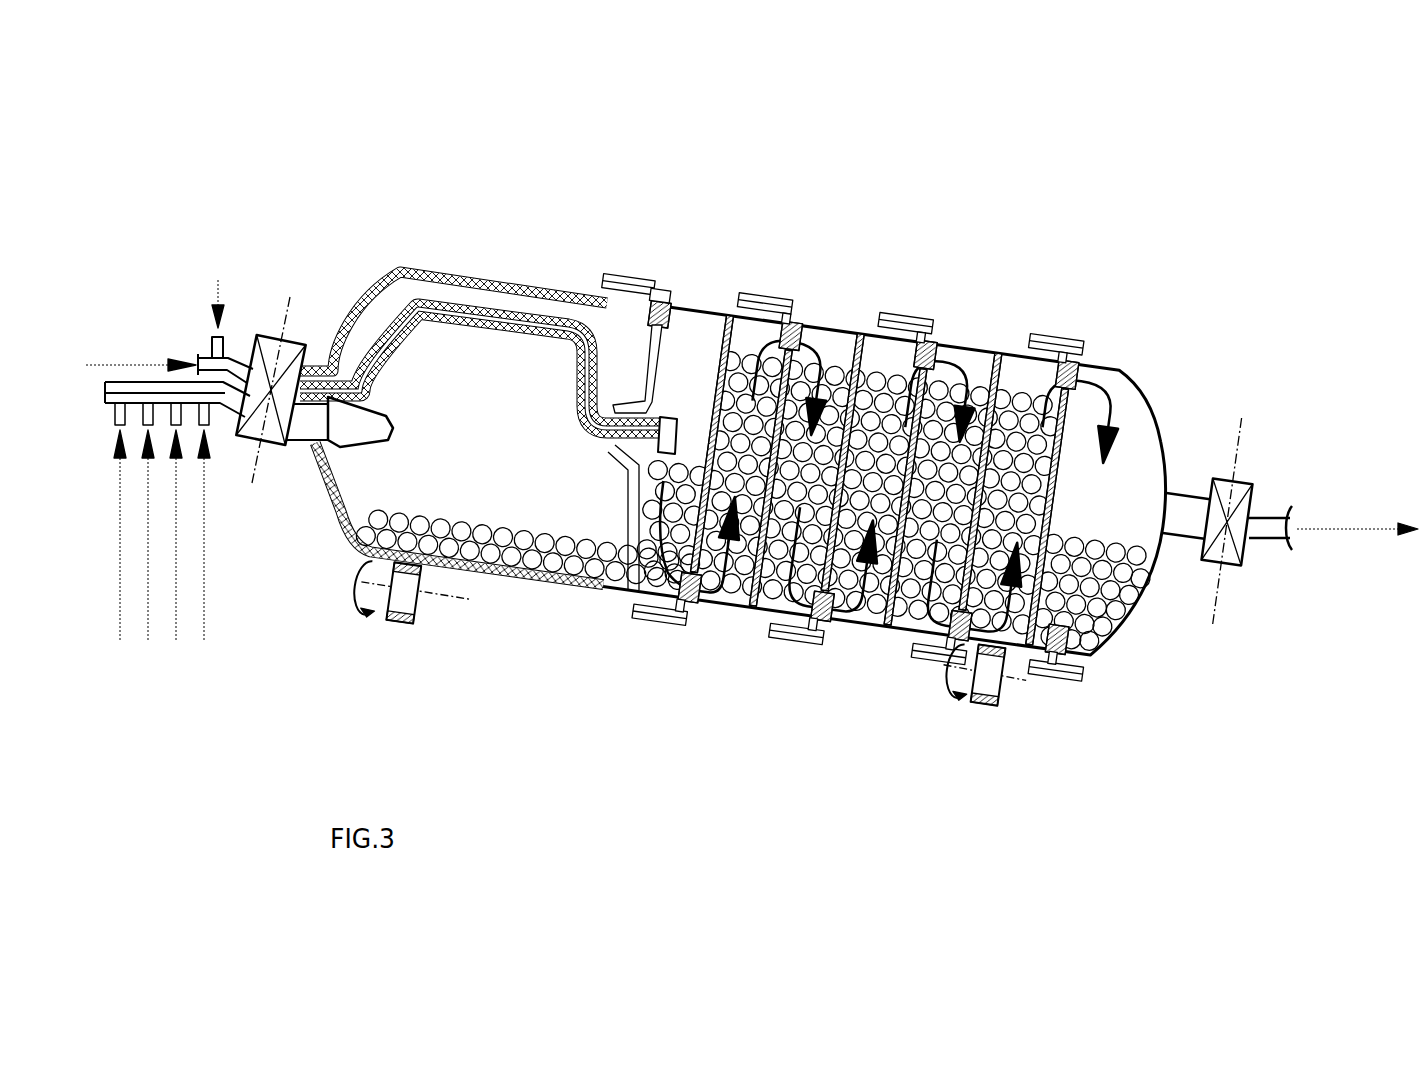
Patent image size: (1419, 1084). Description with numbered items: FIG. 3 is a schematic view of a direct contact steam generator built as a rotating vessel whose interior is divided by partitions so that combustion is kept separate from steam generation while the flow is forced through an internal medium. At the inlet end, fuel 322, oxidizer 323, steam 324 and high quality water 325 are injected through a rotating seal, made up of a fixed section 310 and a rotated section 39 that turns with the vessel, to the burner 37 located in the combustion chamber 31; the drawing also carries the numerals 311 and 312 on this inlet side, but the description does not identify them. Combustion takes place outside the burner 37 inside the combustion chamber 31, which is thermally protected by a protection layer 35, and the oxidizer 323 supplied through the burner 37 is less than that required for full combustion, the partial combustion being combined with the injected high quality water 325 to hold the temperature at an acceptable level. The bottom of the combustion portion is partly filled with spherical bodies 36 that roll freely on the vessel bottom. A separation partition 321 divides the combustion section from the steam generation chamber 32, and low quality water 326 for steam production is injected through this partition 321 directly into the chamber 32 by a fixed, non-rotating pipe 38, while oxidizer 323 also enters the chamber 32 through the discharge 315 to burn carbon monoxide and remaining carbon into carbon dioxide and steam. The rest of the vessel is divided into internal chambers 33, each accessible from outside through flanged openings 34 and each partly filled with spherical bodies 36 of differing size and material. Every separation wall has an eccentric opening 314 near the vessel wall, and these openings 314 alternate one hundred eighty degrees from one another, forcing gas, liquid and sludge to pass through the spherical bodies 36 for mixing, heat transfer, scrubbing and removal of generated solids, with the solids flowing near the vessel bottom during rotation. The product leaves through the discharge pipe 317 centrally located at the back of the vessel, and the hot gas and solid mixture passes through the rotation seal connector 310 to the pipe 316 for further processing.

The combustion chamber 31 is at (492, 292).
The steam generation chamber 32 is at (697, 318).
The internal chambers 33 is at (834, 340).
The flanged openings 34 is at (614, 284).
The protection layer 35 is at (580, 398).
The spherical bodies 36 is at (568, 563).
The burner 37 is at (377, 430).
The fixed, non-rotating pipe 38 is at (432, 305).
The rotated section 39 is at (303, 332).
The fixed section 310 is at (1222, 480).
The inlet pipe 311 is at (243, 440).
The feed manifold 312 is at (226, 405).
The eccentric opening 314 is at (661, 315).
The discharge 315 is at (679, 415).
The pipe 316 is at (1357, 514).
The discharge pipe 317 is at (1187, 540).
The separation partition 321 is at (622, 400).
The fuel 322 is at (107, 521).
The oxidizer 323 is at (170, 440).
The steam 324 is at (164, 521).
The high quality water 325 is at (192, 521).
The low quality water 326 is at (139, 352).